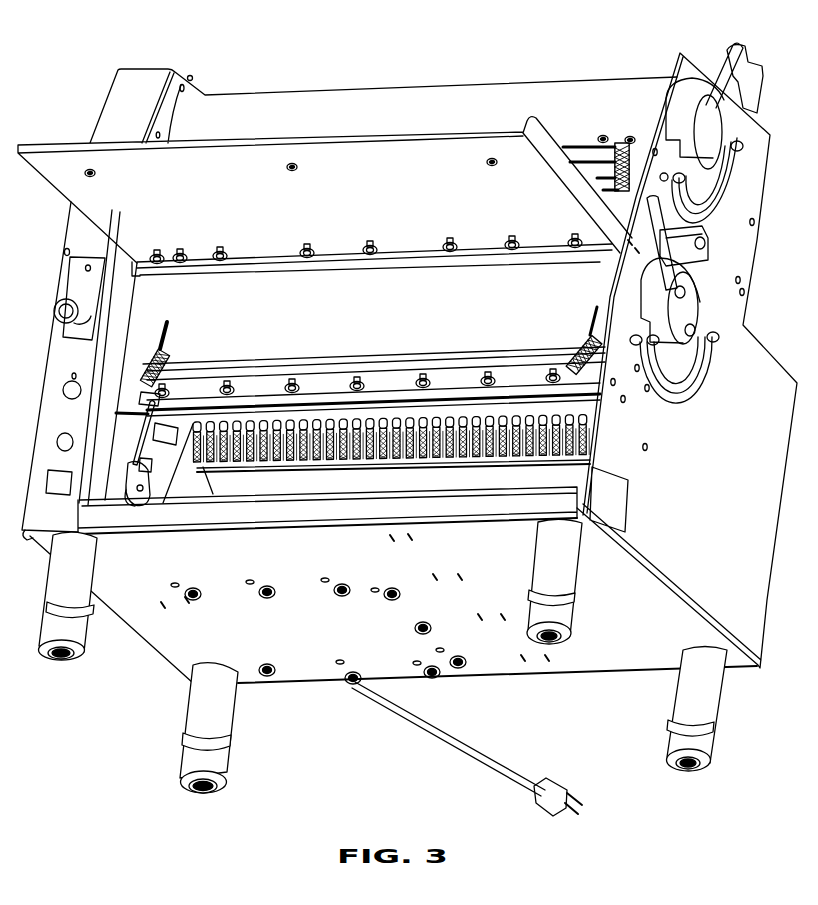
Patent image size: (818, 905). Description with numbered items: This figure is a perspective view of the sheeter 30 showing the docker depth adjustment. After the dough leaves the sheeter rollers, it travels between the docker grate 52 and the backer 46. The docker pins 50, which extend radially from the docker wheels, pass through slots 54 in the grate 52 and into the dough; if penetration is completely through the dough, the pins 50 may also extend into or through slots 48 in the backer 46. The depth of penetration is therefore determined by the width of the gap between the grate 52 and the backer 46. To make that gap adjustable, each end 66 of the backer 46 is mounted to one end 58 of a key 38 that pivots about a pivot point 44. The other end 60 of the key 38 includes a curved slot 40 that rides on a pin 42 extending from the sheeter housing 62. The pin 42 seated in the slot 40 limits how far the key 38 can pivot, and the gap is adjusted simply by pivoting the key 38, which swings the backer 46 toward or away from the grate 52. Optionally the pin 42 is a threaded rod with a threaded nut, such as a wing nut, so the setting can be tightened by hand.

The sheeter 30 is at (233, 56).
The key 38 is at (131, 453).
The curved slot 40 is at (143, 490).
The pin 42 is at (129, 485).
The pivot point 44 is at (150, 465).
The backer 46 is at (314, 422).
The slots 48 is at (224, 434).
The docker pins 50 is at (410, 440).
The docker grate 52 is at (252, 465).
The slots 54 is at (367, 465).
The end of the key 58 is at (146, 404).
The other end of the key 60 is at (127, 499).
The sheeter housing 62 is at (131, 376).
The end of the backer 66 is at (158, 413).